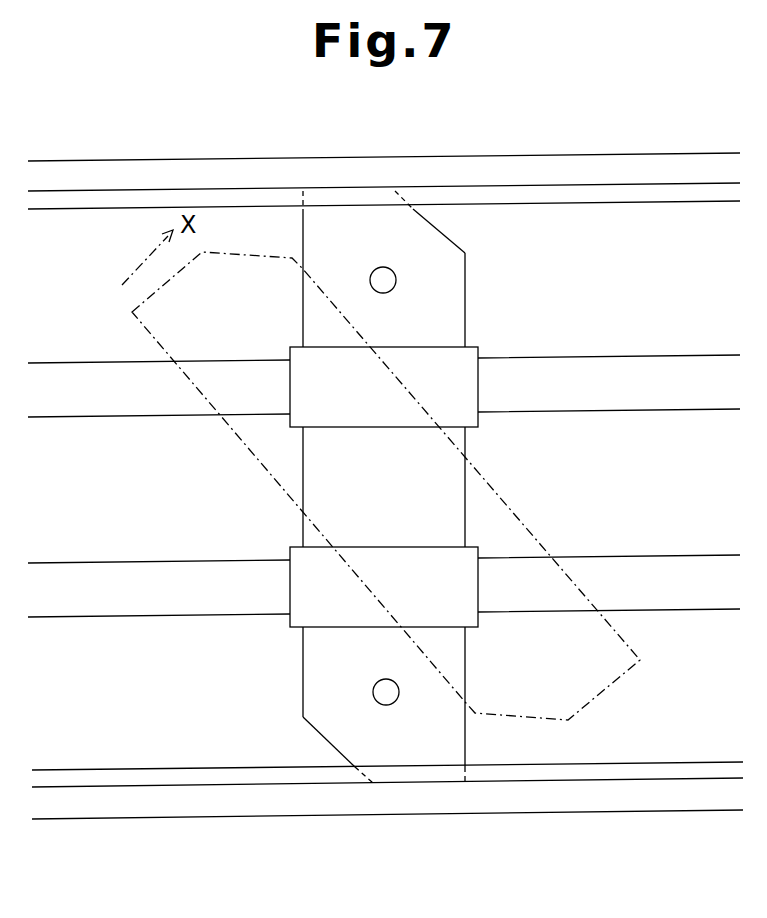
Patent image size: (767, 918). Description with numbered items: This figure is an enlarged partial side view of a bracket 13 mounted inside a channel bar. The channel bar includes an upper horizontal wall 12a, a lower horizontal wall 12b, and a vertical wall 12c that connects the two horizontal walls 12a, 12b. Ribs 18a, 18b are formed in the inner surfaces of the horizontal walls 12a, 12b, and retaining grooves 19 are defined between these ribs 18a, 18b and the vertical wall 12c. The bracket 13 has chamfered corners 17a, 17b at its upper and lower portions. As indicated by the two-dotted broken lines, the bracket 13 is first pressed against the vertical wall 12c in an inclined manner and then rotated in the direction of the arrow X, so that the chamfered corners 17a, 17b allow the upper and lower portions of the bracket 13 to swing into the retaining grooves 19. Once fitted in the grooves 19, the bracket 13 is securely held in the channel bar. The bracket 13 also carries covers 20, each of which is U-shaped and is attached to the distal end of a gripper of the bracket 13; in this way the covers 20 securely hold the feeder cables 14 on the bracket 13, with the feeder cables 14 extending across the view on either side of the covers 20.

The upper horizontal wall 12a is at (192, 167).
The lower horizontal wall 12b is at (278, 805).
The vertical wall 12c is at (611, 223).
The bracket 13 is at (466, 308).
The feeder cables 14 is at (600, 402).
The chamfered corner 17a is at (443, 233).
The chamfered corner 17b is at (323, 737).
The rib 18a is at (443, 200).
The rib 18b is at (553, 773).
The retaining groove 19 is at (328, 196).
The cover 20 is at (352, 424).